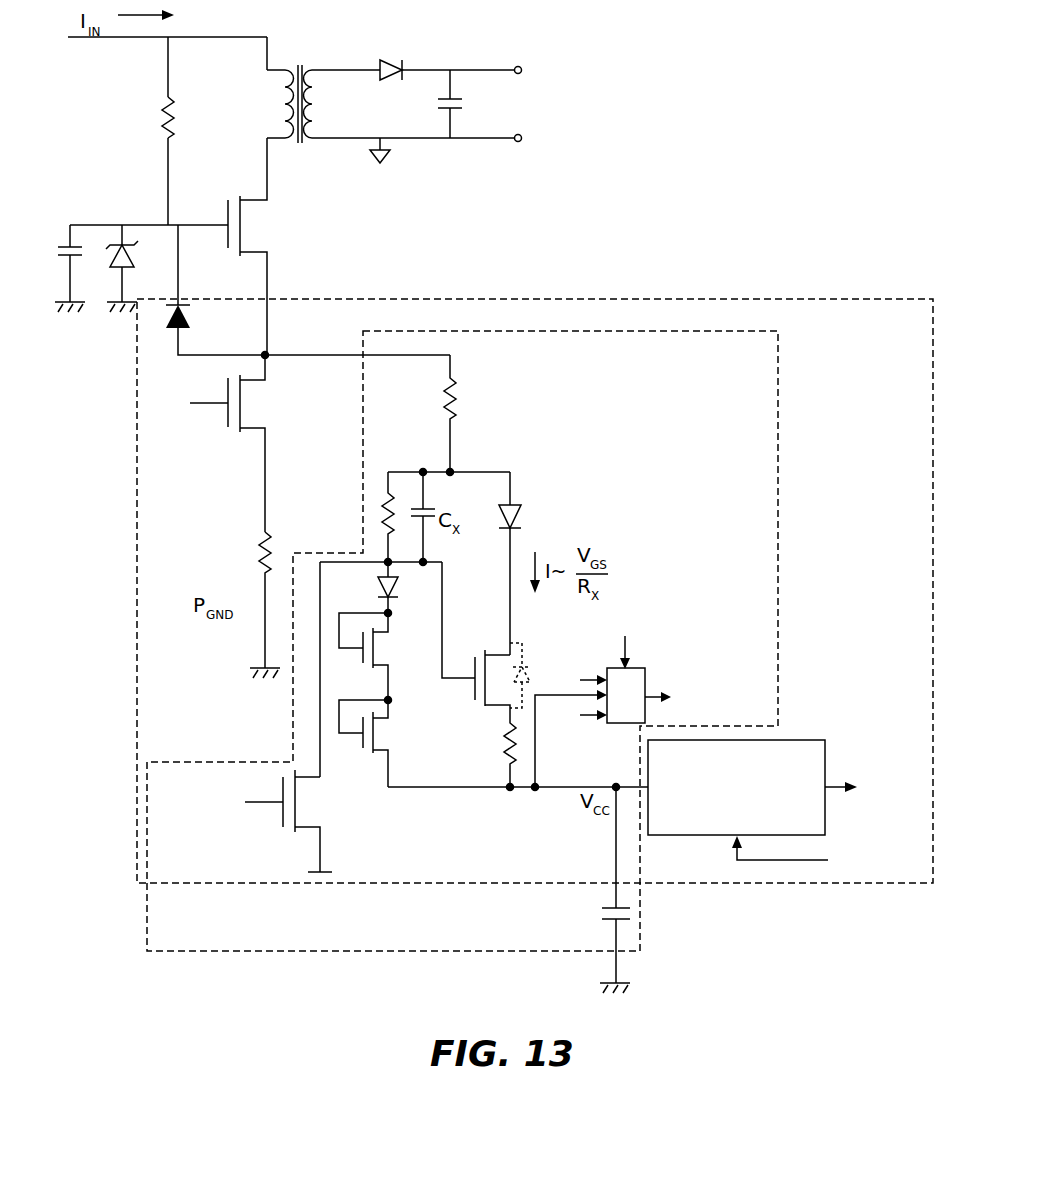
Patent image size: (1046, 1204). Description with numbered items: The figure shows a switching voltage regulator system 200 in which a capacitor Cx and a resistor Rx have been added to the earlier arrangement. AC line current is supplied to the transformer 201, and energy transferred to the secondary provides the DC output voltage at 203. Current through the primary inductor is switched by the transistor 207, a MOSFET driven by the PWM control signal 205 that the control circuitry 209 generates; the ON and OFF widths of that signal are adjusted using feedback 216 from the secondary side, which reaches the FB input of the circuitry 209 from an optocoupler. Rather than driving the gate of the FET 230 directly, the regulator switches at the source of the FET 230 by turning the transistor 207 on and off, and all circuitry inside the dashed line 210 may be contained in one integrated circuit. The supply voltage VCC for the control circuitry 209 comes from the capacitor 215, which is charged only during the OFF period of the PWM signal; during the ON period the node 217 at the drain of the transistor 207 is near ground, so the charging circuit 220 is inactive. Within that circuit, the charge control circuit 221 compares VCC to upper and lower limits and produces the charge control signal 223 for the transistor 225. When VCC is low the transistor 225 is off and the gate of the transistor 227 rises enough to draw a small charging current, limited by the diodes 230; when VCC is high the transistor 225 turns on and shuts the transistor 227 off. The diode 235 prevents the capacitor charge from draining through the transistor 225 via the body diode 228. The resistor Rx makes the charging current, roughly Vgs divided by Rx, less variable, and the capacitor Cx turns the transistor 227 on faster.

The switching voltage regulator system 200 is at (622, 220).
The transformer 201 is at (301, 58).
The DC output voltage VOUT 203 is at (560, 110).
The PWM control signal 205 is at (215, 410).
The transistor 207 is at (232, 440).
The control circuitry 209 is at (797, 740).
The dashed line 210 is at (501, 298).
The capacitor 215 is at (635, 910).
The feedback 216 is at (792, 862).
The node 217 is at (268, 353).
The charging circuit 220 is at (778, 521).
The charge control circuit 221 is at (651, 688).
The charge control signal 223 is at (668, 688).
The transistor 225 is at (310, 790).
The transistor 227 is at (465, 663).
The body diode 228 is at (534, 652).
The diodes / FET 230 is at (214, 198).
The diode 235 is at (521, 512).